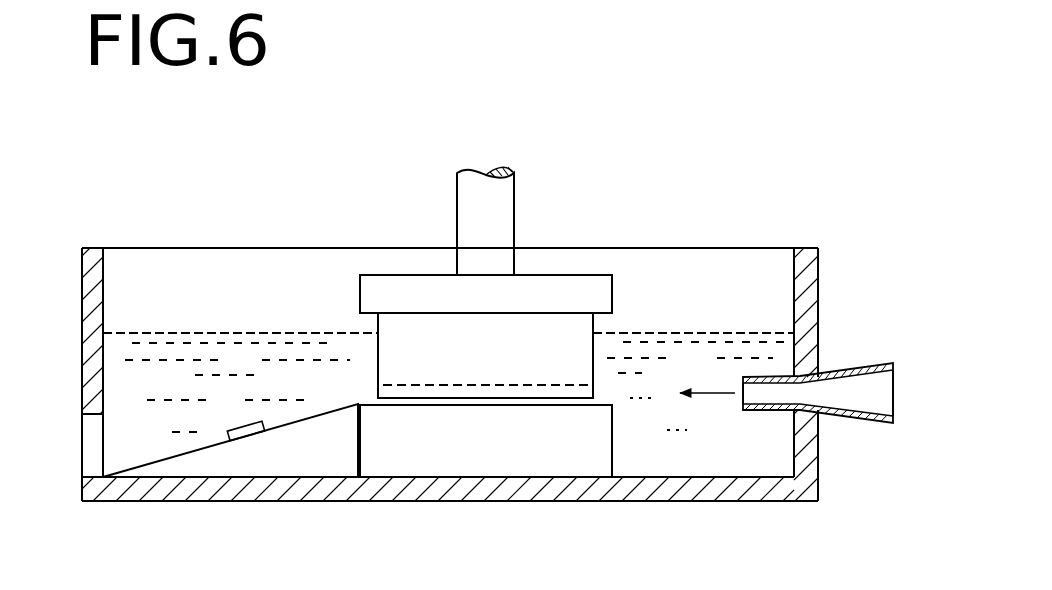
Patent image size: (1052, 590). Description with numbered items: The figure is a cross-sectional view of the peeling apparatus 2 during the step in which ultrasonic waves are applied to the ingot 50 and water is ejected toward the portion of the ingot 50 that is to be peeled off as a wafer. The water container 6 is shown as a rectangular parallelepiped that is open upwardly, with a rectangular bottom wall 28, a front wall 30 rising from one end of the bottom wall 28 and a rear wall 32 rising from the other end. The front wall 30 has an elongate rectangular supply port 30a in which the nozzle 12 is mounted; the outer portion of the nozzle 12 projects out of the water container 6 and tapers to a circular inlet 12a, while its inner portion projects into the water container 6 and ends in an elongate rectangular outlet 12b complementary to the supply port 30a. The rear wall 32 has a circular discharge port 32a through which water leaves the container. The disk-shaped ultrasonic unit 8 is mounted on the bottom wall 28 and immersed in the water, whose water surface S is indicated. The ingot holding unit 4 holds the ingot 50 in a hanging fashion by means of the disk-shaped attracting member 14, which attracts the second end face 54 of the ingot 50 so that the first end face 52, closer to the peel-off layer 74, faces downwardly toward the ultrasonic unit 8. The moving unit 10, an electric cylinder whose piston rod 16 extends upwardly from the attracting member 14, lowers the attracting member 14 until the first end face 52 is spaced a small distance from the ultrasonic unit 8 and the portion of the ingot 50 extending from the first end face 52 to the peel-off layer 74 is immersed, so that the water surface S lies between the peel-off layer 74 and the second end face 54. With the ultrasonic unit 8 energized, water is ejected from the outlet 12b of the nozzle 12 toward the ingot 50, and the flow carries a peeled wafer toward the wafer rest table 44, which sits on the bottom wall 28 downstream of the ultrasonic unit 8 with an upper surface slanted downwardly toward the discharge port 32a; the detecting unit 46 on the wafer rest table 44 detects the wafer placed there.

The peeling apparatus 2 is at (155, 210).
The ingot holding unit 4 is at (579, 270).
The water container 6 is at (802, 242).
The ultrasonic unit 8 is at (556, 468).
The moving unit 10 is at (448, 192).
The nozzle 12 is at (878, 362).
The inlet 12a is at (893, 393).
The outlet 12b is at (743, 398).
The attracting member 14 is at (600, 297).
The piston rod 16 is at (506, 224).
The bottom wall 28 is at (418, 492).
The front wall 30 is at (813, 278).
The supply port 30a is at (818, 405).
The rear wall 32 is at (92, 280).
The discharge port 32a is at (96, 430).
The wafer rest table 44 is at (185, 468).
The detecting unit 46 is at (245, 447).
The ingot 50 is at (375, 363).
The first end face 52 is at (490, 398).
The second end face 54 is at (422, 312).
The peel-off layer 74 is at (427, 385).
The water surface S is at (236, 333).